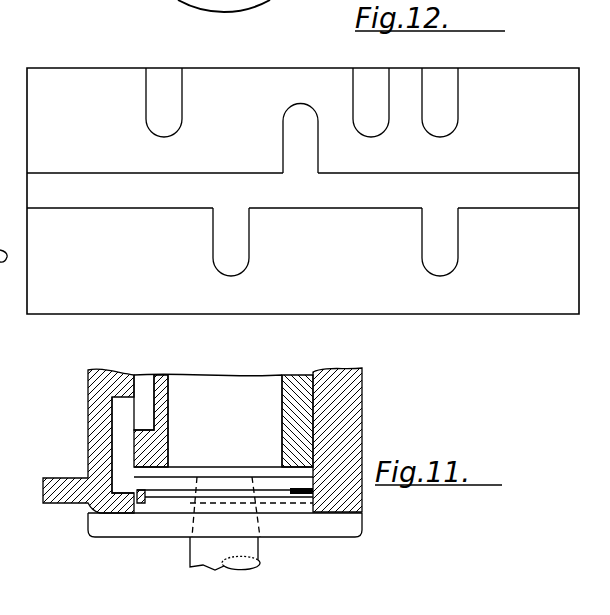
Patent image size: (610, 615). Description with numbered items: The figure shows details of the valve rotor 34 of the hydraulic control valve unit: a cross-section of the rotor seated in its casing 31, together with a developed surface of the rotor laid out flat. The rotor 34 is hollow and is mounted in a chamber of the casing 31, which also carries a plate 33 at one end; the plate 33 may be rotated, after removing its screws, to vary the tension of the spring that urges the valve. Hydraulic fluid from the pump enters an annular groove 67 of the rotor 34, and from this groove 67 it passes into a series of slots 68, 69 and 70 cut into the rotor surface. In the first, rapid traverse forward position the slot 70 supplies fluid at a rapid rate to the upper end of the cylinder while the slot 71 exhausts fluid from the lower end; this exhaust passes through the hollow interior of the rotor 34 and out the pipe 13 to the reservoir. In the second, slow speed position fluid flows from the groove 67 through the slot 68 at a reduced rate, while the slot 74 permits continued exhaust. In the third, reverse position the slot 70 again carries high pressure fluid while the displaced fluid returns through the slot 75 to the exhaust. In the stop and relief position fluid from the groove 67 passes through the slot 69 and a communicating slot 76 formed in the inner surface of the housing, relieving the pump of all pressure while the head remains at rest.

In FIG. 11, the pipe 13 is at (225, 523).
In FIG. 11, the casing 31 is at (362, 424).
In FIG. 11, the plate 33 is at (345, 533).
In FIG. 12, the valve rotor 34 is at (303, 191).
In FIG. 11, the valve rotor 34 is at (223, 420).
In FIG. 12, the annular groove 67 is at (303, 190).
In FIG. 12, the slot 68 is at (245, 245).
In FIG. 12, the slot 69 is at (452, 246).
In FIG. 11, the slot 69 is at (147, 402).
In FIG. 12, the slot 70 is at (284, 148).
In FIG. 12, the slot 71 is at (449, 83).
In FIG. 12, the slot 74 is at (354, 83).
In FIG. 12, the slot 75 is at (147, 108).
In FIG. 11, the communicating slot 76 is at (118, 412).